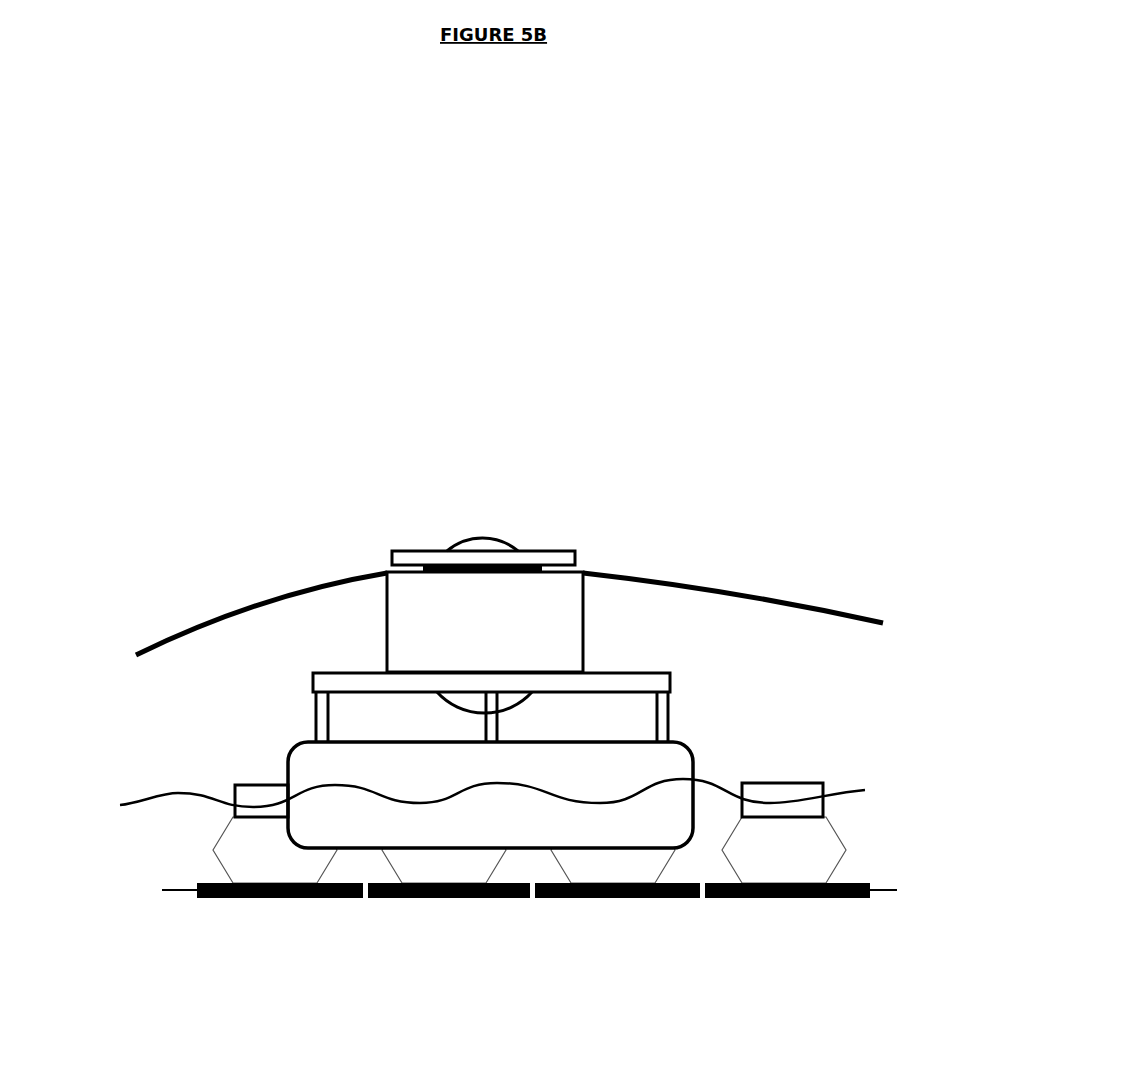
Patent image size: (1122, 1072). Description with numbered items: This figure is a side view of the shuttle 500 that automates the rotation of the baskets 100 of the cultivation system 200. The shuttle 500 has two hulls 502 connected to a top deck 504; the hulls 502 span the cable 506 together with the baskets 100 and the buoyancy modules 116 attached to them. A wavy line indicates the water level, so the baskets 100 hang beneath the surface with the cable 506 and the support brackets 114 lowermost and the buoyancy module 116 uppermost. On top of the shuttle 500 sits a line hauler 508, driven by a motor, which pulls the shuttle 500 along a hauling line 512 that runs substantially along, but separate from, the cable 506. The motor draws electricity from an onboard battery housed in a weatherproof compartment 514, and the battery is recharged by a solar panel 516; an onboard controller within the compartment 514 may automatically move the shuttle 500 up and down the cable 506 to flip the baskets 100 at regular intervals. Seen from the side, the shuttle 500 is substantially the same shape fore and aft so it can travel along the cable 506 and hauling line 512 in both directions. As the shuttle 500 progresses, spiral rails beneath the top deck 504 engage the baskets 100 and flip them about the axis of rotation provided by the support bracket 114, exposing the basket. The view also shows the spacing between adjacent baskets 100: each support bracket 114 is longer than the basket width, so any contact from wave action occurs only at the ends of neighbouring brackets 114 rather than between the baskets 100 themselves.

The shuttle 500 is at (362, 420).
The cultivation system 200 is at (180, 942).
The basket 100 is at (247, 852).
The support bracket 114 is at (284, 897).
The cable 506 is at (885, 895).
The hull 502 is at (592, 828).
The buoyancy module 116 is at (235, 785).
The top deck 504 is at (325, 683).
The weatherproof compartment 514 is at (585, 615).
The line hauler 508 is at (483, 537).
The solar panel 516 is at (238, 608).
The hauling line 512 is at (797, 605).